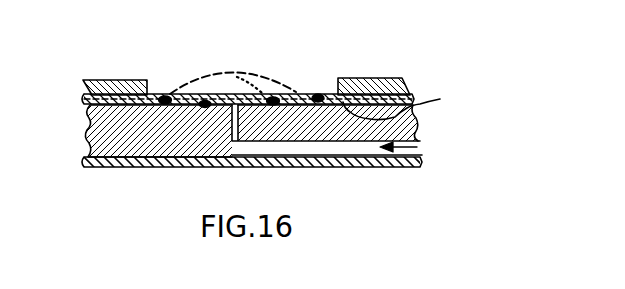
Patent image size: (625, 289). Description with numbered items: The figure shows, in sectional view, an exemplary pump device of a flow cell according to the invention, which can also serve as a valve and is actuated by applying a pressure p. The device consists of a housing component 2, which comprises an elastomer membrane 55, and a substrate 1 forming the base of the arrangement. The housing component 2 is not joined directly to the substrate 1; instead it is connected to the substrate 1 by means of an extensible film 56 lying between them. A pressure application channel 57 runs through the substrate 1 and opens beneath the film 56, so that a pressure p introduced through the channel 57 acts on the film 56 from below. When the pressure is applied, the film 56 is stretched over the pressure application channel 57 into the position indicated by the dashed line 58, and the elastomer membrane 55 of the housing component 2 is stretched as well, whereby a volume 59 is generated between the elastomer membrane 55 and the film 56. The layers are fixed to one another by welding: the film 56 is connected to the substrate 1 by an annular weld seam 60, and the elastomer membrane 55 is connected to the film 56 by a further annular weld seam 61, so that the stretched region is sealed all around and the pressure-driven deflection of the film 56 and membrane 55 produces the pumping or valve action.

The substrate 1 is at (88, 135).
The housing component 2 is at (96, 80).
The elastomer membrane 55 is at (282, 88).
The extensible film 56 is at (410, 100).
The pressure application channel 57 is at (238, 122).
The dashed line 58 is at (205, 77).
The volume 59 is at (290, 88).
The annular weld seam 60 is at (203, 105).
The annular weld seam 61 is at (163, 102).